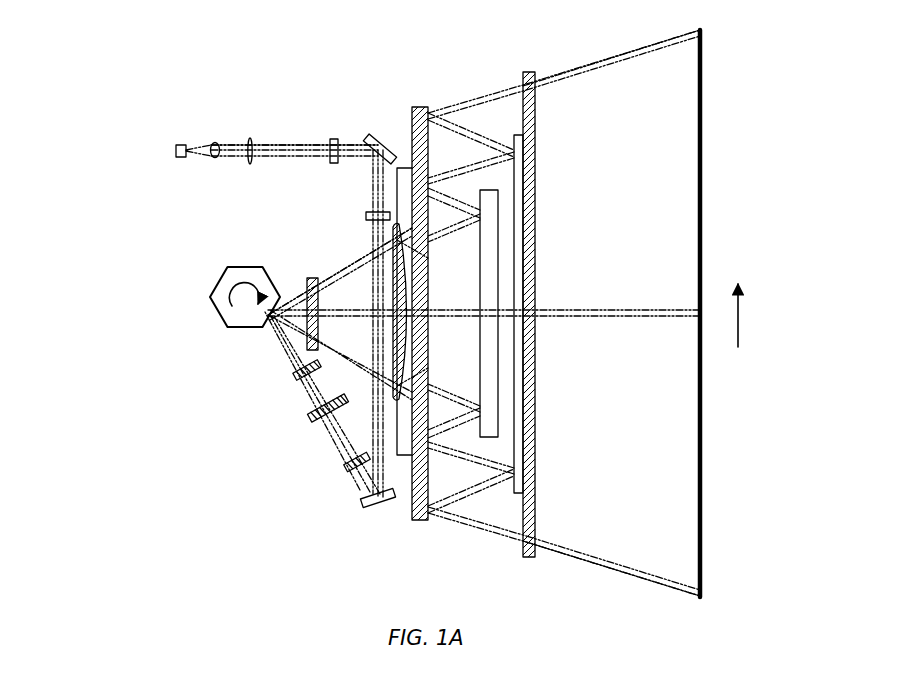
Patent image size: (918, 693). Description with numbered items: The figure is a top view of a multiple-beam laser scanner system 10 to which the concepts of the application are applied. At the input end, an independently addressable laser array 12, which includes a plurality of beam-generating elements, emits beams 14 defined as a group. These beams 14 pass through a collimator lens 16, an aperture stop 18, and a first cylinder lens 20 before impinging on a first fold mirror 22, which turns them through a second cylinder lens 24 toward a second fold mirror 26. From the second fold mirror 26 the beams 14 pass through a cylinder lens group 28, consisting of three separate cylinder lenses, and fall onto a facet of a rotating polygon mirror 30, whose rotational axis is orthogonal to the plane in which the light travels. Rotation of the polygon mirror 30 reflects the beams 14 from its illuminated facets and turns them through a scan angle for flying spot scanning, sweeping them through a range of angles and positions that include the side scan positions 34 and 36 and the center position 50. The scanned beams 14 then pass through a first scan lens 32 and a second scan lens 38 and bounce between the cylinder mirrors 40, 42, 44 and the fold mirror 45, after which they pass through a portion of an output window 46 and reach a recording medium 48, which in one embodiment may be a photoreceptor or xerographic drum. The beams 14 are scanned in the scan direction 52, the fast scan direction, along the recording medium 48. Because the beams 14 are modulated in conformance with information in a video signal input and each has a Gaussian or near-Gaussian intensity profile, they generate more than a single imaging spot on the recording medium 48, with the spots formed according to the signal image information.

The multiple-beam laser scanner system 10 is at (237, 110).
The independently addressable laser array 12 is at (176, 156).
The beams 14 is at (233, 145).
The collimator lens 16 is at (215, 158).
The aperture stop 18 is at (249, 165).
The first cylinder lens 20 is at (332, 163).
The first fold mirror 22 is at (380, 137).
The second cylinder lens 24 is at (366, 216).
The second fold mirror 26 is at (373, 505).
The cylinder lens group 28 is at (287, 380).
The rotating polygon mirror 30 is at (232, 271).
The first scan lens 32 is at (307, 280).
The side scan position 34 is at (343, 268).
The side scan position 36 is at (346, 372).
The second scan lens 38 is at (405, 285).
The cylinder mirror 40 is at (480, 386).
The cylinder mirror 42 is at (407, 456).
The cylinder mirror 44 is at (419, 107).
The fold mirror 45 is at (517, 136).
The output window 46 is at (530, 557).
The recording medium 48 is at (700, 128).
The center position 50 is at (538, 304).
The scan direction 52 is at (739, 315).